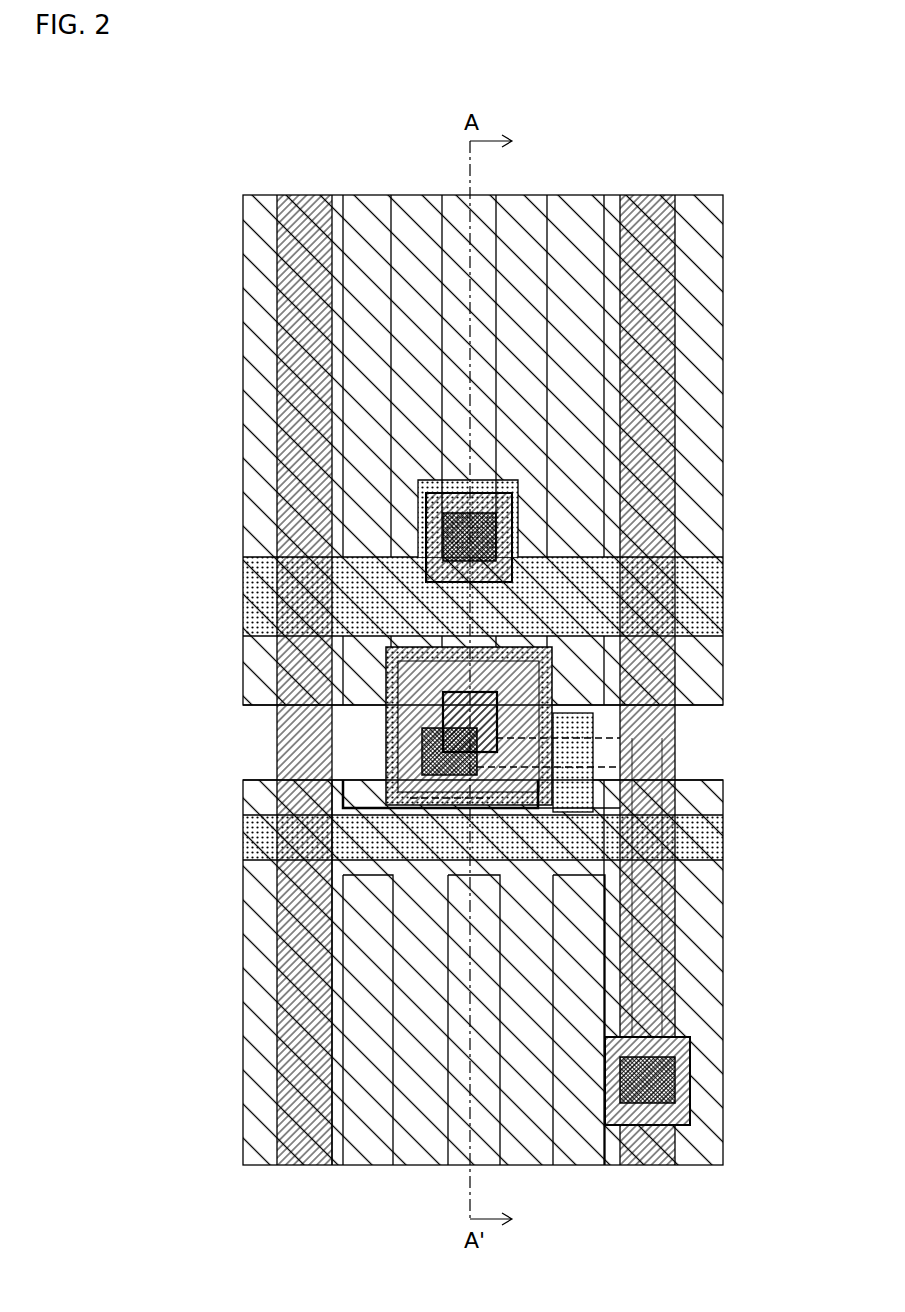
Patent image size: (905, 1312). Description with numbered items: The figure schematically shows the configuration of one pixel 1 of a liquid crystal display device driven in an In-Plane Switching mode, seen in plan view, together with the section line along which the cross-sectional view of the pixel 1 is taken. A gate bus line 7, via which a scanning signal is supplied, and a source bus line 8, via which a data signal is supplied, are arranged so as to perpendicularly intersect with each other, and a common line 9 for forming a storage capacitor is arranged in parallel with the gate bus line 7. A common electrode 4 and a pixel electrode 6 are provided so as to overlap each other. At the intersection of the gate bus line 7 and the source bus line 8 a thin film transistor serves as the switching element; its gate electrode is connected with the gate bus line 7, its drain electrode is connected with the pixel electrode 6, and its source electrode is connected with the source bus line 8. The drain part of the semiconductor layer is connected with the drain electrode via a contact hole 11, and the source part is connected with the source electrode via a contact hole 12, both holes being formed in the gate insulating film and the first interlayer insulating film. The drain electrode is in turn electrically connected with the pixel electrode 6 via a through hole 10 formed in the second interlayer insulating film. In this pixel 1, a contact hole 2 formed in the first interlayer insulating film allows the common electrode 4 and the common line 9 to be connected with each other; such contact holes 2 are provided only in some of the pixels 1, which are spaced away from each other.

The pixel 1 is at (800, 232).
The contact hole 2 is at (418, 521).
The common electrode 4 is at (717, 303).
The pixel electrode 6 is at (577, 208).
The gate bus line 7 is at (243, 838).
The source bus line 8 is at (674, 718).
The common line 9 is at (243, 590).
The through hole 10 is at (443, 713).
The contact hole 11 is at (422, 752).
The contact hole 12 is at (690, 1077).